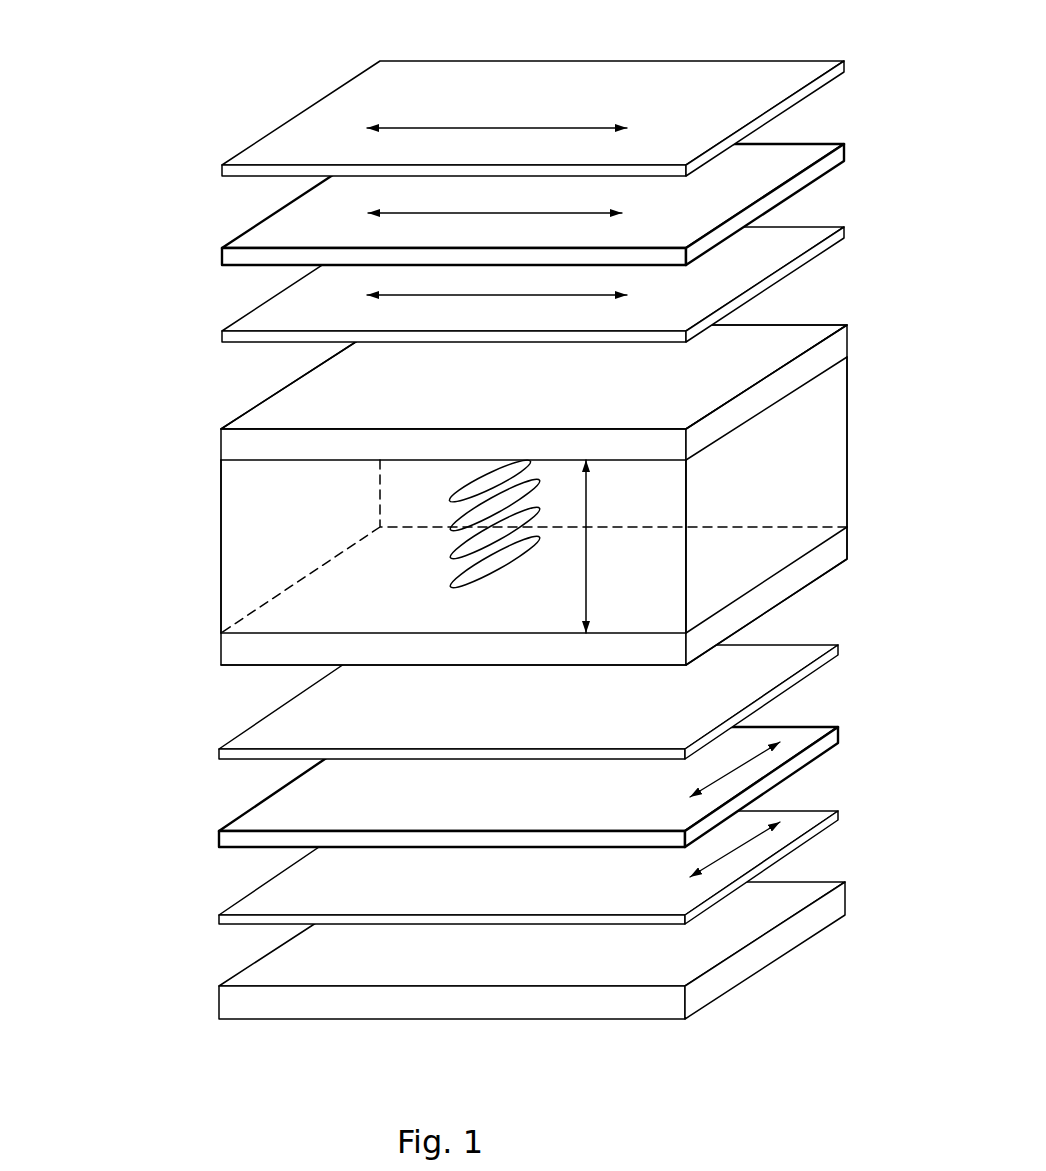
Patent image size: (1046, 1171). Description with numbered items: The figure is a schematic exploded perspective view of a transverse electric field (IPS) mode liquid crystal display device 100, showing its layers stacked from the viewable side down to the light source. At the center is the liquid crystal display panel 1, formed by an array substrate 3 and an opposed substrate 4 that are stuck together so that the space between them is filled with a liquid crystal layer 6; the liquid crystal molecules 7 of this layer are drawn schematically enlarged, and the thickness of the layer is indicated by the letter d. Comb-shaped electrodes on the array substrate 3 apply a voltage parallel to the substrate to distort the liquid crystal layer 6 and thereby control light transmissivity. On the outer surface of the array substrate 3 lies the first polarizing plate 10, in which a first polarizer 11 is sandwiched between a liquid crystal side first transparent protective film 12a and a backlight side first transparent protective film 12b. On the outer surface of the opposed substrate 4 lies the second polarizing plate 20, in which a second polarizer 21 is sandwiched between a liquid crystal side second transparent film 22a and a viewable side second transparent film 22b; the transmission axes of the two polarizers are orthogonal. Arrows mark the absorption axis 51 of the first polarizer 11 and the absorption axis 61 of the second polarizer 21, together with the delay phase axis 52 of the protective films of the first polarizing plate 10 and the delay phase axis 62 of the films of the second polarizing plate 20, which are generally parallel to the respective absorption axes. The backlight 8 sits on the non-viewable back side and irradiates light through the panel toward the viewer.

The liquid crystal display device 100 is at (695, 22).
The liquid crystal display panel 1 is at (434, 492).
The array substrate 3 is at (227, 651).
The opposed substrate 4 is at (227, 451).
The liquid crystal layer 6 is at (500, 495).
The liquid crystal molecules 7 is at (457, 547).
The backlight 8 is at (227, 1002).
The first polarizing plate 10 is at (454, 784).
The first polarizer 11 is at (280, 808).
The liquid crystal side first transparent protective film 12a is at (486, 702).
The backlight side first transparent protective film 12b is at (285, 889).
The second polarizing plate 20 is at (458, 201).
The second polarizer 21 is at (285, 226).
The liquid crystal side second transparent film 22a is at (290, 306).
The viewable side second transparent film 22b is at (492, 118).
The absorption axis 51 is at (735, 769).
The delay phase axis 52 is at (735, 849).
The absorption axis 61 is at (495, 202).
The delay phase axis 62 is at (497, 284).